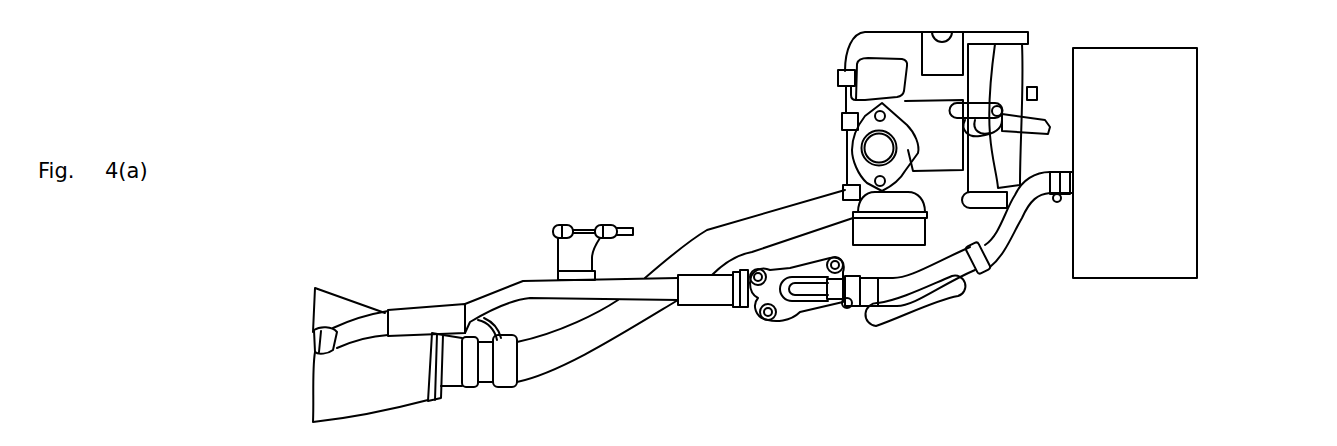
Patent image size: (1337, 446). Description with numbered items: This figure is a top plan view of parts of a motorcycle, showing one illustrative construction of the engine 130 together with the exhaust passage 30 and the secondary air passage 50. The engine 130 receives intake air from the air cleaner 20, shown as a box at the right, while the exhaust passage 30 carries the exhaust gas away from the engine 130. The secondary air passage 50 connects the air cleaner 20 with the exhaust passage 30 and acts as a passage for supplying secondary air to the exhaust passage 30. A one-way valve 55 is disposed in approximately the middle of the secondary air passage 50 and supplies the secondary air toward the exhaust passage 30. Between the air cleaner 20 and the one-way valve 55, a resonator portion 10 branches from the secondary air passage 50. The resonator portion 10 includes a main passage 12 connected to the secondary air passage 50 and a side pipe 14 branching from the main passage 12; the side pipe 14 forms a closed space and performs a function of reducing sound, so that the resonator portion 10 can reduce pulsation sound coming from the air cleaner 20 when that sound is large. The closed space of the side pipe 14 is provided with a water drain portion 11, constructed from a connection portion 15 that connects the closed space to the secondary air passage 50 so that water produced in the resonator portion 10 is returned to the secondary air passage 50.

The resonator portion 10 is at (960, 308).
The water drain portion 11 is at (1046, 237).
The main passage 12 is at (935, 262).
The side pipe 14 is at (922, 307).
The connection portion 15 is at (1021, 237).
The air cleaner 20 is at (1176, 97).
The exhaust passage 30 is at (627, 325).
The secondary air passage 50 is at (520, 288).
The one-way valve 55 is at (797, 308).
The engine 130 is at (873, 148).